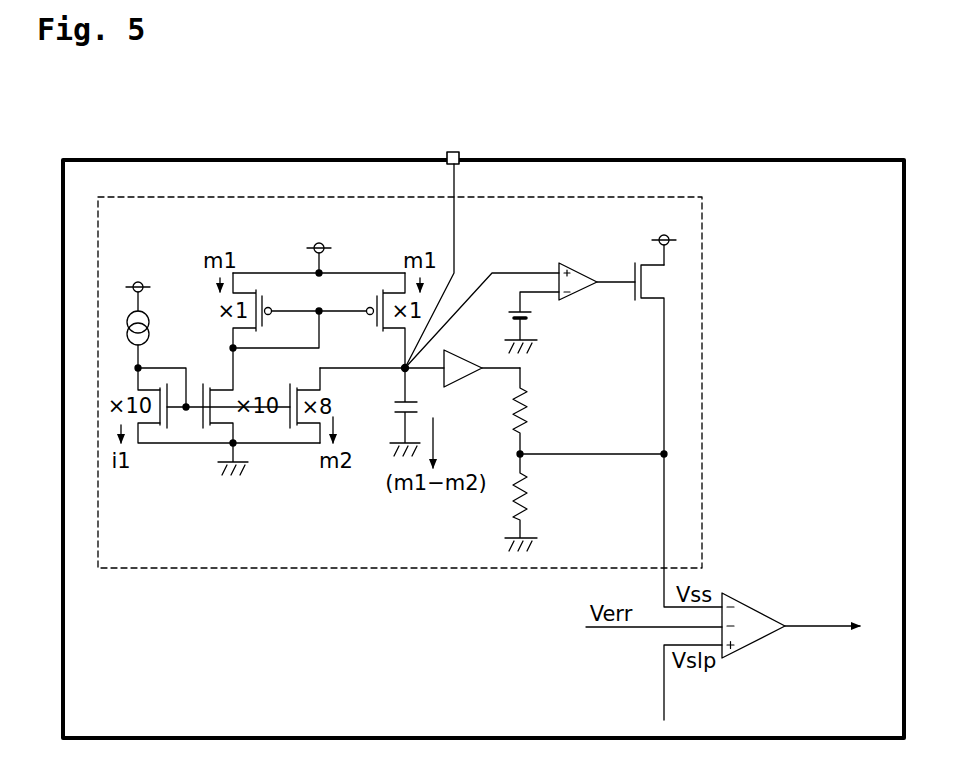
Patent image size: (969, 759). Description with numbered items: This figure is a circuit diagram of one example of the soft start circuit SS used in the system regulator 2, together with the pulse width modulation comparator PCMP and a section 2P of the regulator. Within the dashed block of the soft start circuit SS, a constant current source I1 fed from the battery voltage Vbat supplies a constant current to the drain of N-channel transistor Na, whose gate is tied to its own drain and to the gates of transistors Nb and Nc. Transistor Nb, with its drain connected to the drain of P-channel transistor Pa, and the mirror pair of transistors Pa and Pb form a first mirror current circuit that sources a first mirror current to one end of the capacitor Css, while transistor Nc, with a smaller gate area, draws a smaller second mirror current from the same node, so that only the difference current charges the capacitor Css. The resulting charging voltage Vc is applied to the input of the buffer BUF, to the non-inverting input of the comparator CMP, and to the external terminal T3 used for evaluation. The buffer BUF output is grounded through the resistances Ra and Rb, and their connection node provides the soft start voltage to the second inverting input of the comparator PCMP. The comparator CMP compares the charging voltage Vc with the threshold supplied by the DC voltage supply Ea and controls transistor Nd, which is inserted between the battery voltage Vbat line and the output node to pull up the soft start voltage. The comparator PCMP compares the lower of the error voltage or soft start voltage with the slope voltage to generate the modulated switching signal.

The system regulator 2 is at (697, 158).
The PWM control section 2P is at (357, 639).
The external terminal T3 is at (453, 152).
The soft start circuit SS is at (704, 384).
The battery voltage Vbat is at (401, 261).
The constant current source I1 is at (150, 330).
The N-channel field effect transistor Na is at (168, 420).
The N-channel field effect transistor Nb is at (204, 386).
The N-channel field effect transistor Nc is at (288, 422).
The N-channel field effect transistor Nd is at (633, 300).
The P-channel field effect transistor Pa is at (266, 302).
The P-channel field effect transistor Pb is at (375, 302).
The charging voltage Vc is at (401, 366).
The capacitor Css is at (397, 406).
The buffer BUF is at (463, 389).
The resistance Ra is at (529, 414).
The resistance Rb is at (530, 499).
The DC voltage supply Ea is at (511, 318).
The comparator CMP is at (579, 267).
The PWM comparator PCMP is at (755, 603).